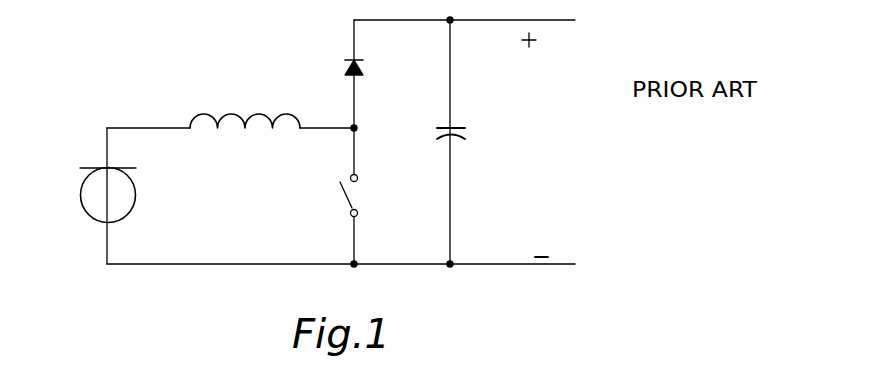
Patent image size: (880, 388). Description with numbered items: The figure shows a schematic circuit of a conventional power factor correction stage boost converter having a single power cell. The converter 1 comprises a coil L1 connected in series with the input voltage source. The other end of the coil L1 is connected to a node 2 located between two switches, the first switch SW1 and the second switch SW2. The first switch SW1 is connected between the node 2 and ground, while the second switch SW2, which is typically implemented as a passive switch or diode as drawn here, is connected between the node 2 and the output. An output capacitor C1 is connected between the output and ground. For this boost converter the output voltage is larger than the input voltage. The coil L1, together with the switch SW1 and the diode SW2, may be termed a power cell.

The converter 1 is at (178, 58).
The node 2 is at (353, 135).
The coil L1 is at (246, 103).
The first switch SW1 is at (378, 196).
The second switch SW2 is at (385, 73).
The output capacitor C1 is at (470, 140).